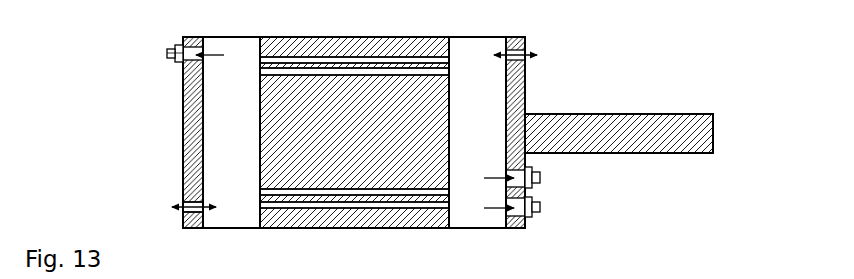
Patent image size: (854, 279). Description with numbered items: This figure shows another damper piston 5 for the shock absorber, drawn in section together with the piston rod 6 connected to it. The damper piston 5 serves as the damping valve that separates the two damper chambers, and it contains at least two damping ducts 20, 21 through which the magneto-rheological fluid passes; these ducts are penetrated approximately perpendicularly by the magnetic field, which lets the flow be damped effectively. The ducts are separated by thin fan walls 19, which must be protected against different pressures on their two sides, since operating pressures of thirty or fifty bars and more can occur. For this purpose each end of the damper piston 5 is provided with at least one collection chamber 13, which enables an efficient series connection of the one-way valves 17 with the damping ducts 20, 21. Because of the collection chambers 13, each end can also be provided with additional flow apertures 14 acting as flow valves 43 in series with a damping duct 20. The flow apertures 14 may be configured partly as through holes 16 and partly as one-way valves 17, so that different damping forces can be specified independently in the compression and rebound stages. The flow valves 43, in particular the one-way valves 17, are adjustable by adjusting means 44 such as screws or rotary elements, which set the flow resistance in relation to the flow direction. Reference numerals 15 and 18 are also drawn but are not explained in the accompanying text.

The damper piston 5 is at (325, 220).
The piston rod 6 is at (683, 147).
The collection chamber 13 is at (240, 218).
The flow apertures 14 is at (182, 201).
The side plate 15 is at (182, 67).
The through holes 16 is at (180, 208).
The one-way valve 17 is at (178, 63).
The clamping arrow 18 is at (207, 58).
The fan walls 19 is at (258, 200).
The damping duct 20 is at (445, 62).
The damping duct 21 is at (450, 78).
The flow valves 43 is at (168, 48).
The adjusting means 44 is at (168, 56).